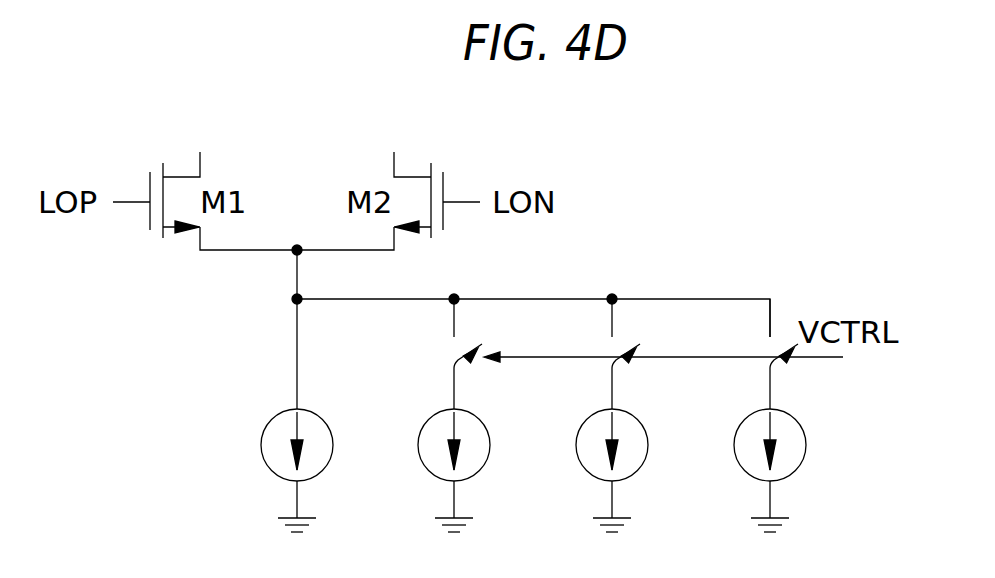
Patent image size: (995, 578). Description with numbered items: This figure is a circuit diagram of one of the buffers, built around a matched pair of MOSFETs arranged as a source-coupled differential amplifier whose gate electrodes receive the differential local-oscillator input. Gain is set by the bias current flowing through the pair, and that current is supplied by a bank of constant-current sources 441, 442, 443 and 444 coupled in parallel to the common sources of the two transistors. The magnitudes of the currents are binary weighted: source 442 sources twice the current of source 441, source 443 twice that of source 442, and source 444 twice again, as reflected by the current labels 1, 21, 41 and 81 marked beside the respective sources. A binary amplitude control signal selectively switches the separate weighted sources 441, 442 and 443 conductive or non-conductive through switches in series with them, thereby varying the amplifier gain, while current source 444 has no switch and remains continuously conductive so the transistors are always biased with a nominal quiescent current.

The constant-current source 441 is at (746, 415).
The constant-current source 442 is at (584, 415).
The constant-current source 443 is at (428, 415).
The constant-current source 444 is at (266, 415).
The current value 8I 81 is at (325, 354).
The current value 4I 41 is at (486, 354).
The current value 2I 21 is at (643, 354).
The current value I 1 is at (800, 354).